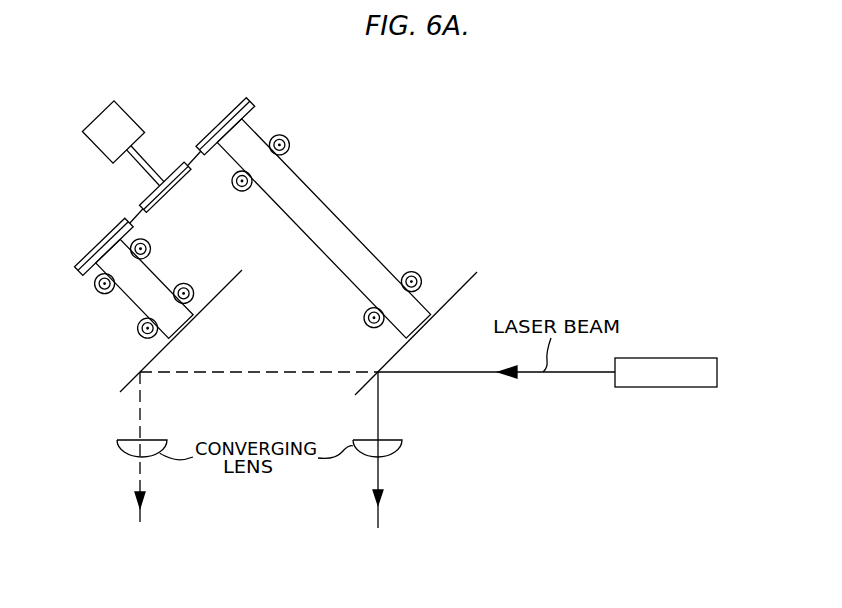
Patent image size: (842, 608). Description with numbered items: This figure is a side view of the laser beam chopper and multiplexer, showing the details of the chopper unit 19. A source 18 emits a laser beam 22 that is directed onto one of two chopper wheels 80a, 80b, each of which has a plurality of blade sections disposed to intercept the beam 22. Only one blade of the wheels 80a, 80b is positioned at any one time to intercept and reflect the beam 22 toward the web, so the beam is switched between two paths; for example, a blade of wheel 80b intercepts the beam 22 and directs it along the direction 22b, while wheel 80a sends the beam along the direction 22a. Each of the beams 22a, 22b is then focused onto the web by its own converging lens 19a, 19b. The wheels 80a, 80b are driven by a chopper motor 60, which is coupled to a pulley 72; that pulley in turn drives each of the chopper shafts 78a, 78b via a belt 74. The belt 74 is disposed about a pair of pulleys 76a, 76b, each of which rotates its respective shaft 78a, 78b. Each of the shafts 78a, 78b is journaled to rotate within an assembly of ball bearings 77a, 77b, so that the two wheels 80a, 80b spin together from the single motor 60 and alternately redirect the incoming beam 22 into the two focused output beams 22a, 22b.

The source 18 is at (693, 358).
The chopper unit 19 is at (274, 95).
The converging lens 19a is at (395, 440).
The converging lens 19b is at (125, 440).
The beam 22 is at (430, 372).
The beam 22a is at (378, 516).
The beam 22b is at (140, 513).
The chopper motor 60 is at (128, 118).
The pulley 72 is at (175, 192).
The belt 74 is at (137, 217).
The pulley 76a is at (210, 130).
The pulley 76b is at (87, 253).
The ball bearings 77a is at (370, 303).
The ball bearings 77b is at (172, 290).
The chopper shaft 78a is at (322, 205).
The chopper shaft 78b is at (156, 272).
The chopper wheel 80a is at (458, 293).
The chopper wheel 80b is at (220, 297).